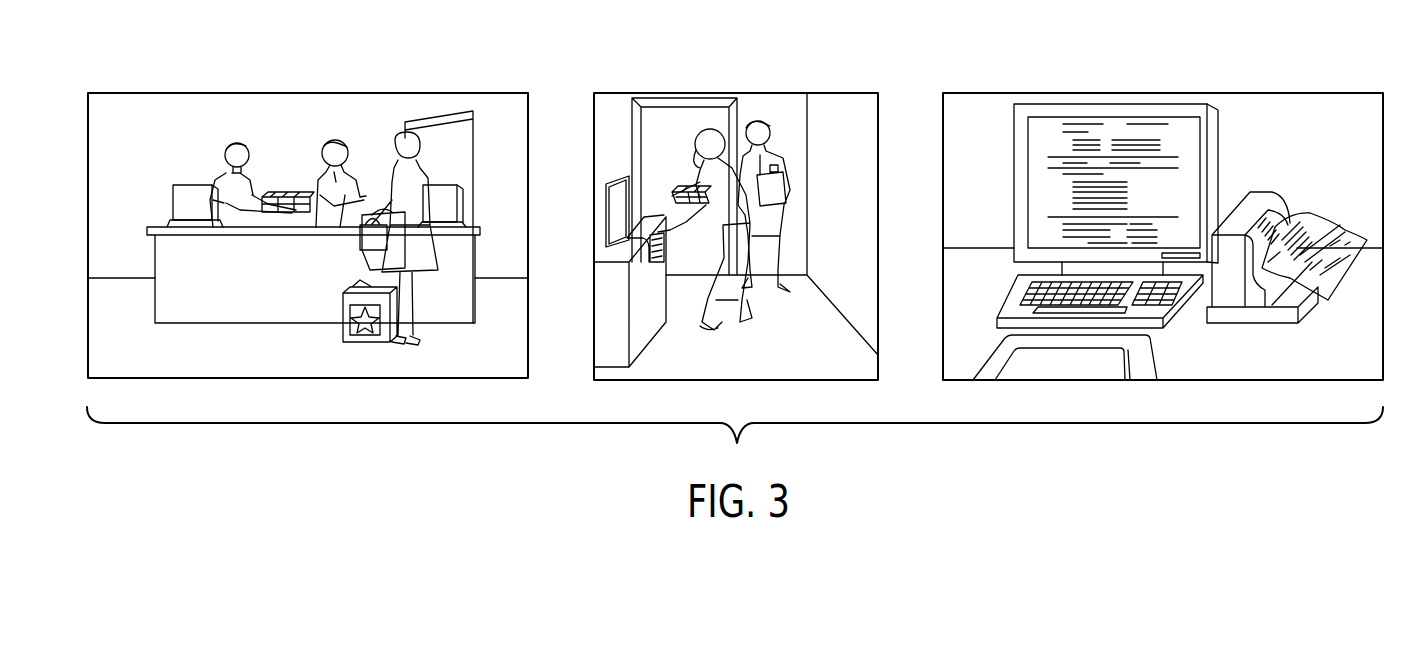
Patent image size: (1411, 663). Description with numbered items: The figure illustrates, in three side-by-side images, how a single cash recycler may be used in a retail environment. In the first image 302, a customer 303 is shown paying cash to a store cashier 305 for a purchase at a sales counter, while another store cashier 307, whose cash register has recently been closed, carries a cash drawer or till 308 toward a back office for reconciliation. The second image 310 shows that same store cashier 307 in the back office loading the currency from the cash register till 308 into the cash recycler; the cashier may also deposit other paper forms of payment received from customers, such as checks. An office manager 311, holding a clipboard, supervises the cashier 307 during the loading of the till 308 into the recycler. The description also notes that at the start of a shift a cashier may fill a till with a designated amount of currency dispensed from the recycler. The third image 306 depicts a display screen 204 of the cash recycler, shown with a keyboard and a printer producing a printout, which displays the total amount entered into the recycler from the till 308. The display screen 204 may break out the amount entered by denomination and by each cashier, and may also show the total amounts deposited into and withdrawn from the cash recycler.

The image 302 is at (123, 113).
The customer 303 is at (423, 258).
The store cashier 305 is at (325, 148).
The image 306 is at (1313, 110).
The store cashier 307 is at (233, 140).
The cash drawer or till 308 is at (297, 212).
The image 310 is at (832, 112).
The office manager 311 is at (780, 208).
The display screen 204 is at (1052, 130).